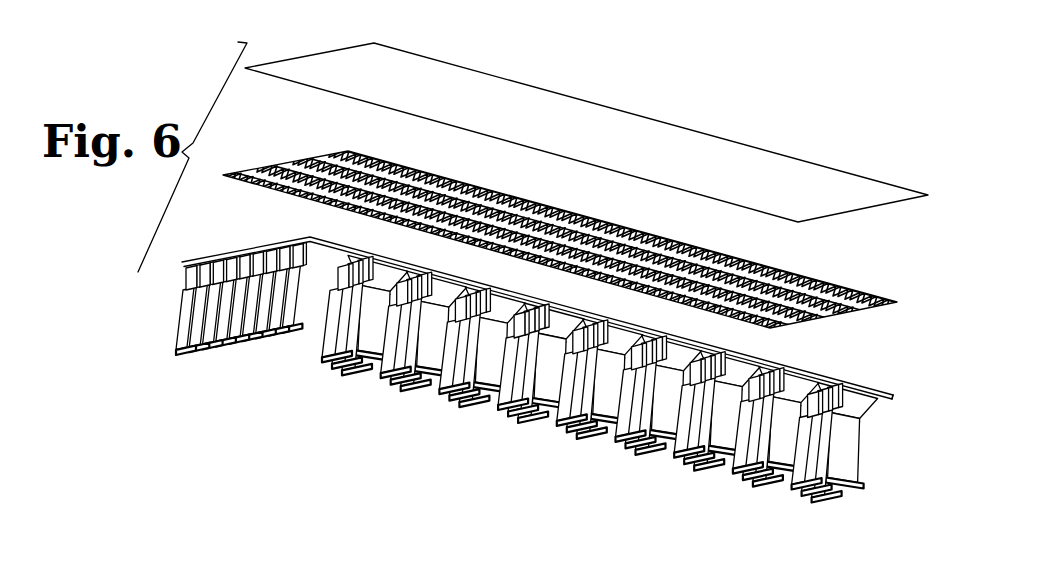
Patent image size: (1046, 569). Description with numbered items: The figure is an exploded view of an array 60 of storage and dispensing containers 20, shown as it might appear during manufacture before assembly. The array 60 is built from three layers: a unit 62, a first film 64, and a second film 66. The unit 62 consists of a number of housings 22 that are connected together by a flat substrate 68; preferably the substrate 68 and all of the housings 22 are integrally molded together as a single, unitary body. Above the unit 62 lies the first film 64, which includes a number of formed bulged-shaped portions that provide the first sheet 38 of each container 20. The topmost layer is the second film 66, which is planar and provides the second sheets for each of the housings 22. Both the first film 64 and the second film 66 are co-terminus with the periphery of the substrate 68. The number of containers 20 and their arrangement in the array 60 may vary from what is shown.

The array 60 is at (732, 106).
The second film 66 is at (333, 49).
The first film 64 is at (242, 172).
The first sheet 38 is at (300, 182).
The unit 62 is at (183, 268).
The housing 22 is at (205, 357).
The container 20 is at (363, 410).
The substrate 68 is at (891, 394).